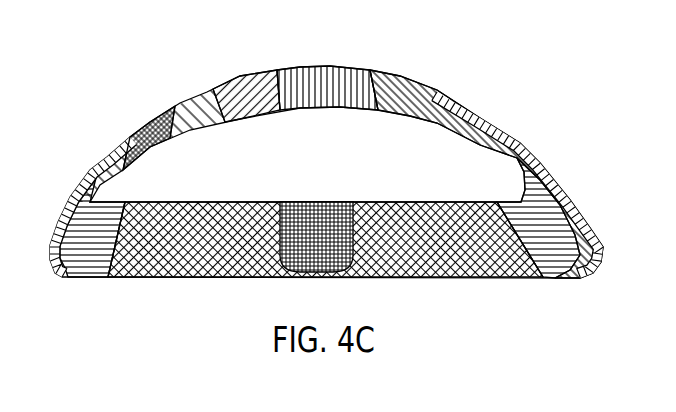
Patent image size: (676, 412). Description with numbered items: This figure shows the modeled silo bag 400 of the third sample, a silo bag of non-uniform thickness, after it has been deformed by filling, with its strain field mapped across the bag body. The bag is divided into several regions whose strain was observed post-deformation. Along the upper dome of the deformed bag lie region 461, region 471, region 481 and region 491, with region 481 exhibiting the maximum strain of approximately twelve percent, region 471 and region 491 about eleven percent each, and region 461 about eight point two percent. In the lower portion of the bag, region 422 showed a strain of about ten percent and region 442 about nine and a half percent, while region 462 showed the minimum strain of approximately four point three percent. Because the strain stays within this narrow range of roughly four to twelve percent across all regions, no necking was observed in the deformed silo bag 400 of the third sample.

The multi-layer dome structure 400 is at (492, 82).
The region 422 is at (209, 192).
The region 442 is at (310, 196).
The region 461 is at (82, 152).
The region 462 is at (505, 201).
The region 471 is at (231, 66).
The region 481 is at (301, 60).
The region 491 is at (434, 84).